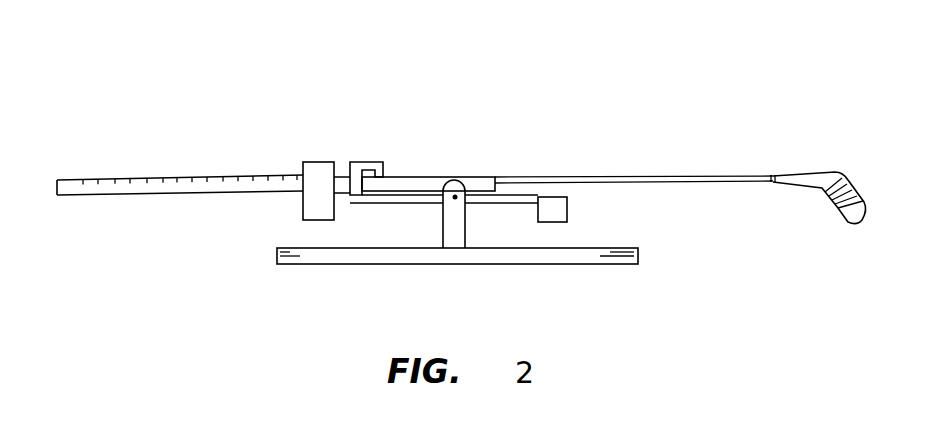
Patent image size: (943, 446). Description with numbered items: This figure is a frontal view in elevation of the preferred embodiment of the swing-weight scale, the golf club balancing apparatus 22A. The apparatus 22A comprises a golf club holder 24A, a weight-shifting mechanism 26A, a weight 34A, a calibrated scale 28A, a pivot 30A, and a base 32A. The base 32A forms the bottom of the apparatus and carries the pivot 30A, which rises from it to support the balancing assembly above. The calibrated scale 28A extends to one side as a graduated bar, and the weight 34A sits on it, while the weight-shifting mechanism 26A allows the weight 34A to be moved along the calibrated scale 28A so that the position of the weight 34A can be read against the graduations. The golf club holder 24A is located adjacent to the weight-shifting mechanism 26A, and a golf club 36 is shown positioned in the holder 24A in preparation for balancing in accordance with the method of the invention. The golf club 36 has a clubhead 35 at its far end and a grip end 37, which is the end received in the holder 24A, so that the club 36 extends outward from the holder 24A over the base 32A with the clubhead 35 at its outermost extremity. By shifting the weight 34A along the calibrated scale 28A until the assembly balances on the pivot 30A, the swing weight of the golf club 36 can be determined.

The golf club balancing apparatus 22A is at (387, 272).
The golf club holder 24A is at (458, 142).
The weight-shifting mechanism 26A is at (295, 172).
The calibrated scale 28A is at (180, 230).
The pivot 30A is at (406, 214).
The base 32A is at (475, 238).
The weight 34A is at (353, 141).
The clubhead 35 is at (819, 225).
The golf club 36 is at (635, 151).
The grip end 37 is at (467, 148).